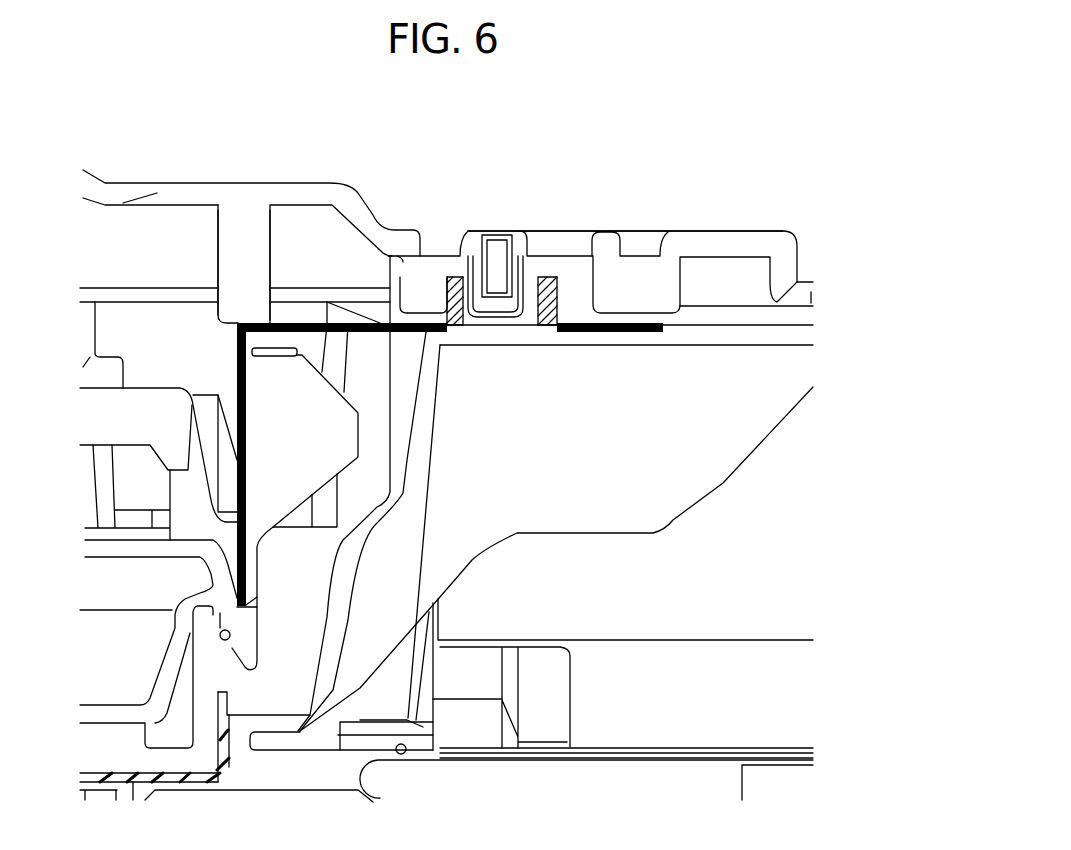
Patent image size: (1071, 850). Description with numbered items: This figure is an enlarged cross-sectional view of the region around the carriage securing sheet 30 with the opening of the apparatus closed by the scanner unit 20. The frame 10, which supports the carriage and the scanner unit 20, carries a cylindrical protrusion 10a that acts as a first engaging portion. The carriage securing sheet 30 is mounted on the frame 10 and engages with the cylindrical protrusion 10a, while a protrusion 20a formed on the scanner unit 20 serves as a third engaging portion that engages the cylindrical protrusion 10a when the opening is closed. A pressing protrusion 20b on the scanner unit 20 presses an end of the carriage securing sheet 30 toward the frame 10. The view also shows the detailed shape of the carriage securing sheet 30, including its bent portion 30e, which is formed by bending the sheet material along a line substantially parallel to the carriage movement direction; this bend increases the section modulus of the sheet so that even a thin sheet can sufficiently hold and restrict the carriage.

The frame 10 is at (650, 333).
The cylindrical protrusion 10a is at (557, 286).
The scanner unit 20 is at (592, 243).
The protrusion 20a is at (498, 305).
The pressing protrusion 20b is at (243, 308).
The carriage securing sheet 30 is at (288, 322).
The bent portion 30e is at (236, 370).